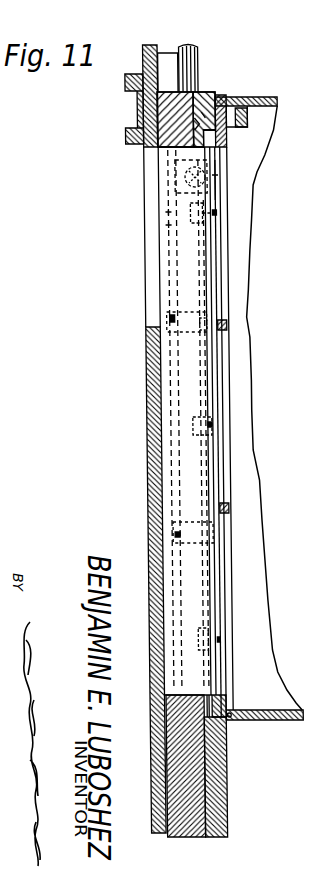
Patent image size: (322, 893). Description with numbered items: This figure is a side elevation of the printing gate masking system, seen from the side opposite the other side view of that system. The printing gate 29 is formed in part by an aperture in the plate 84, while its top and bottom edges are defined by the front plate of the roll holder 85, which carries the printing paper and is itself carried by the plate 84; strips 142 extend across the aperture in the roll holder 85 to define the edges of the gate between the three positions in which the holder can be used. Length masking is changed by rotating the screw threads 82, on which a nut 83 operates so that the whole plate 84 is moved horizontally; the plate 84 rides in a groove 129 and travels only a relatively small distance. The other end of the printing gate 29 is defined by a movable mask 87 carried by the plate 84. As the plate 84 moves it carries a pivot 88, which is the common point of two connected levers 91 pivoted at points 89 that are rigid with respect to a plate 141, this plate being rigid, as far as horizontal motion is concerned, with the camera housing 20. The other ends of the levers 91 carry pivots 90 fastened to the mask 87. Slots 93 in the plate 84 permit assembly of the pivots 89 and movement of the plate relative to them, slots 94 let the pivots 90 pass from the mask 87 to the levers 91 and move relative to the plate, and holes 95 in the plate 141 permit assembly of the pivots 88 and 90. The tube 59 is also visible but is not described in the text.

The camera housing 20 is at (124, 77).
The plate 141 is at (156, 108).
The groove 129 is at (198, 146).
The plate 84 is at (192, 93).
The roll holder 85 is at (267, 98).
The nut 83 is at (202, 182).
The screw threads 82 is at (172, 175).
The tube 59 is at (151, 203).
The pivots 90 is at (166, 216).
The holes 95 is at (165, 235).
The slots 94 is at (210, 217).
The levers 91 is at (203, 253).
The printing gate 29 is at (219, 322).
The pivot points 89 is at (166, 312).
The strips 142 is at (223, 329).
The slots 93 is at (201, 338).
The movable mask 87 is at (214, 397).
The pivot 88 is at (207, 432).